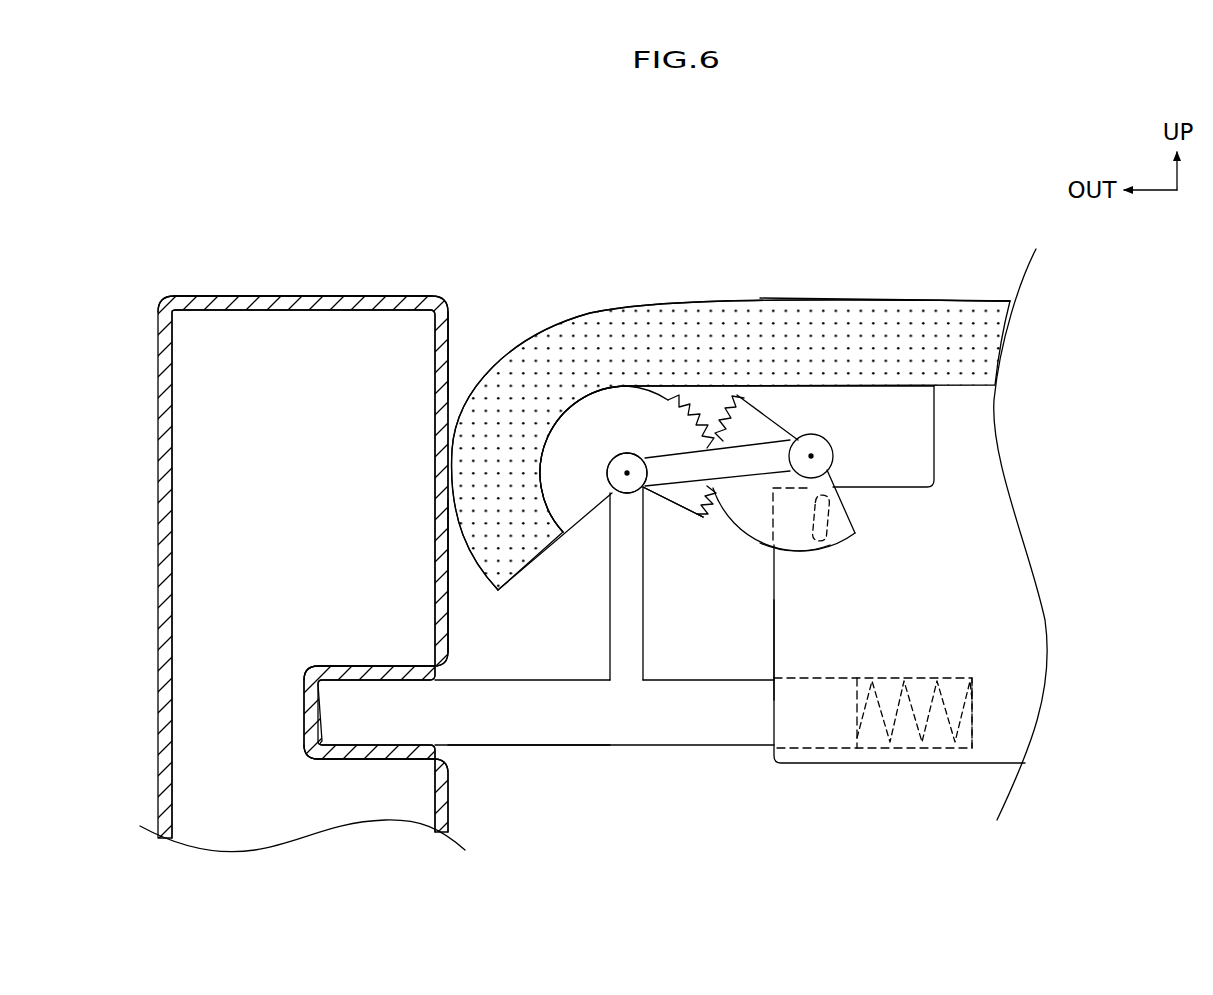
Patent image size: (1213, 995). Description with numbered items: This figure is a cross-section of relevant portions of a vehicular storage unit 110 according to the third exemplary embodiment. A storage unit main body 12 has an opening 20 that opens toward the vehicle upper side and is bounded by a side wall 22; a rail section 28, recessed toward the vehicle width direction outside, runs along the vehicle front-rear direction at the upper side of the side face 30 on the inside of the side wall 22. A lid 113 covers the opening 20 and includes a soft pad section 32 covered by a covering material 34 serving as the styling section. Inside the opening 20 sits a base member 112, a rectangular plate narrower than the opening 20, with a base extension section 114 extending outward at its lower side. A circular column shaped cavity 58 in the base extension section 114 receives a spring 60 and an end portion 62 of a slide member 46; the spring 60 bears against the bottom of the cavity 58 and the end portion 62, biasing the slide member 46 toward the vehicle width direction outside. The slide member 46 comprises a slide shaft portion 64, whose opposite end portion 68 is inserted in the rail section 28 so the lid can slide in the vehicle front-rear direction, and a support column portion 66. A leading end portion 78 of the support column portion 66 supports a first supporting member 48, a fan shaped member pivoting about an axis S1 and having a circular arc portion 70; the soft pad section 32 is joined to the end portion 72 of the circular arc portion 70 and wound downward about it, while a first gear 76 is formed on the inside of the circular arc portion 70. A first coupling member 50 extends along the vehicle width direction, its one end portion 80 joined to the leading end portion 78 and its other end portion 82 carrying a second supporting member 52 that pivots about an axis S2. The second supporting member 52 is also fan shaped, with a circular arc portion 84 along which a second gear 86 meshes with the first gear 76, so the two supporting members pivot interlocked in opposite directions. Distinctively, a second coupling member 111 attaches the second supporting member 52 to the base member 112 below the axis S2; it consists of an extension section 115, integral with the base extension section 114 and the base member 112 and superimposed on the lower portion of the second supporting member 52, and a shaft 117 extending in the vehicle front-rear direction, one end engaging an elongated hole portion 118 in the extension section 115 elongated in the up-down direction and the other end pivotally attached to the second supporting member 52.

The storage unit main body 12 is at (278, 293).
The side wall 22 is at (340, 296).
The side face 30 is at (445, 316).
The opening 20 is at (448, 600).
The rail section 28 is at (346, 676).
The end portion 68 is at (358, 740).
The slide member 46 is at (617, 750).
The slide shaft portion 64 is at (512, 736).
The support column portion 66 is at (630, 634).
The soft pad section 32 is at (735, 318).
The covering material 34 is at (640, 306).
The lid 113 is at (843, 295).
The vehicular storage unit 110 is at (806, 210).
The base member 112 is at (997, 513).
The second coupling member 111 is at (770, 579).
The extension section 115 is at (790, 652).
The elongated hole portion 118 is at (838, 506).
The shaft 117 is at (824, 540).
The end portion 62 is at (845, 742).
The base extension section 114 is at (867, 763).
The spring 60 is at (912, 690).
The cavity 58 is at (908, 742).
The first supporting member 48 is at (576, 518).
The circular arc portion 70 is at (547, 433).
The end portion 72 is at (553, 533).
The first gear 76 is at (682, 396).
The second supporting member 52 is at (750, 520).
The first coupling member 50 is at (688, 478).
The second gear 86 is at (720, 420).
The circular arc portion 84 is at (800, 548).
The other end portion 82 is at (780, 438).
The one length direction end portion 80 is at (645, 462).
The leading end portion 78 is at (626, 466).
The axis S1 is at (625, 473).
The axis S2 is at (813, 456).